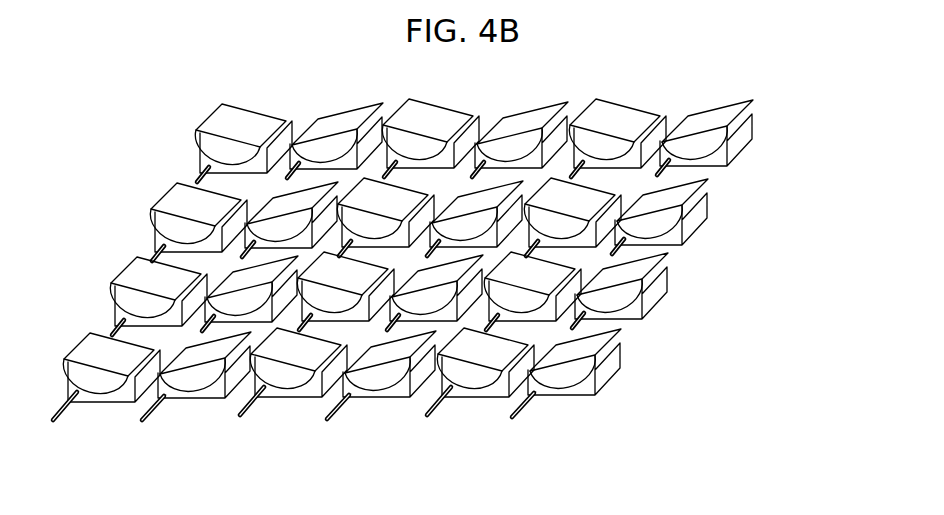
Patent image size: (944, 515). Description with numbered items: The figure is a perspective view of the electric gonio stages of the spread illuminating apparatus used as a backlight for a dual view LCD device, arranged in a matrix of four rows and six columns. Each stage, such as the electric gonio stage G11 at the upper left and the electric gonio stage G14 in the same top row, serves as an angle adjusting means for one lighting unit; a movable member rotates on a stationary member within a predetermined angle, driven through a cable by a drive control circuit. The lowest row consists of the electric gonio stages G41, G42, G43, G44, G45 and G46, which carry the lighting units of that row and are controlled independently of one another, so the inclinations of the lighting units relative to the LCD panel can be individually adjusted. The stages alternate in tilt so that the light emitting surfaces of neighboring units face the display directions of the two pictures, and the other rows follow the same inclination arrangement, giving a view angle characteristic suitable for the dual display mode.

The electric gonio stage G11 is at (200, 167).
The electric gonio stage G14 is at (744, 138).
The electric gonio stage G41 is at (103, 406).
The electric gonio stage G42 is at (195, 403).
The electric gonio stage G43 is at (288, 402).
The electric gonio stage G44 is at (378, 402).
The electric gonio stage G45 is at (470, 402).
The electric gonio stage G46 is at (562, 398).